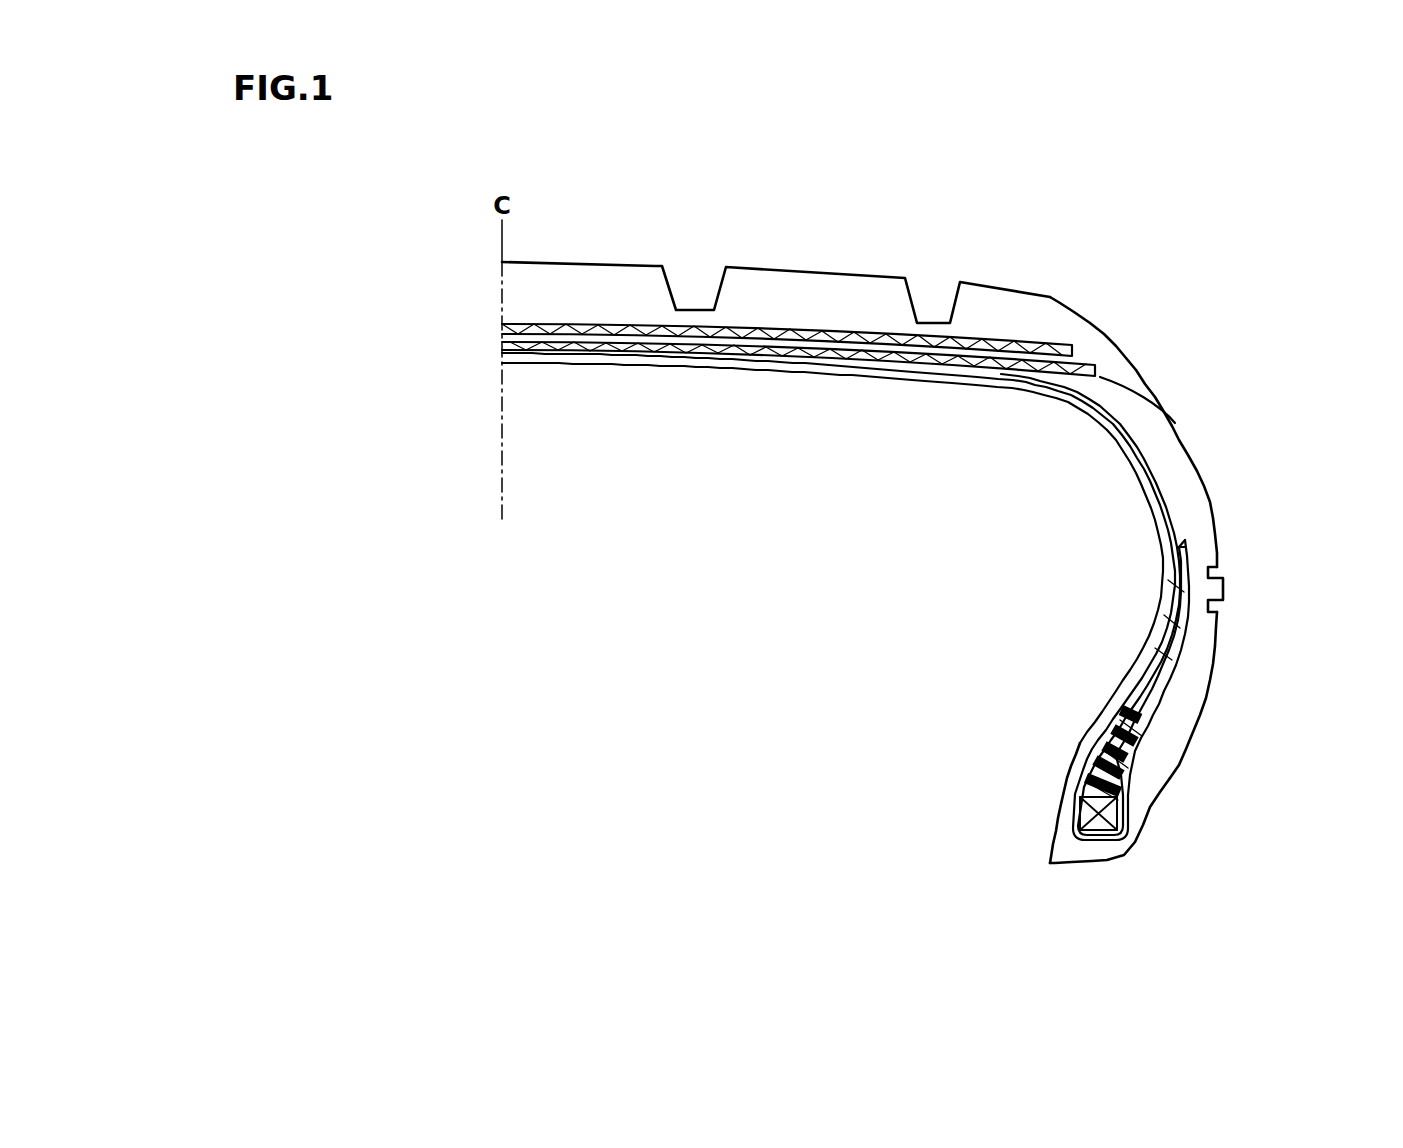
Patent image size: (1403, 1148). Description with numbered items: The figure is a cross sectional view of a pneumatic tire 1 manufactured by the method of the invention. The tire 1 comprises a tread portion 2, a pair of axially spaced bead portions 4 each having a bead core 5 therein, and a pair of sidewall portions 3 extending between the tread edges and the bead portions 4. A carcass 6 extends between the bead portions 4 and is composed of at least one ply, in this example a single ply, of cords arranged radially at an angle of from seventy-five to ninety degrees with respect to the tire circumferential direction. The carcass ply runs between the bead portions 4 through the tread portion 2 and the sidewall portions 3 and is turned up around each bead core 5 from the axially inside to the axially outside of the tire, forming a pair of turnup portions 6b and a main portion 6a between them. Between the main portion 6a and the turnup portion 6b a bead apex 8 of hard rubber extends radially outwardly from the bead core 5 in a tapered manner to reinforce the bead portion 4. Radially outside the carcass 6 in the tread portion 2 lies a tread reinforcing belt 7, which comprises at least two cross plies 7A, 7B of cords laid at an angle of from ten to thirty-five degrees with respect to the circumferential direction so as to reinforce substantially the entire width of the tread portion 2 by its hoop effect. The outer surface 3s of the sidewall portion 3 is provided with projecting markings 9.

The tire 1 is at (1228, 306).
The tread portion 2 is at (844, 252).
The sidewall portion 3 is at (1262, 388).
The outer surface of the sidewall portion 3s is at (1210, 500).
The bead portion 4 is at (1001, 748).
The bead core 5 is at (1097, 823).
The carcass 6 is at (960, 588).
The main portion 6a is at (1140, 663).
The turnup portion 6b is at (1170, 690).
The tread reinforcing belt 7 is at (540, 497).
The belt ply 7A is at (628, 340).
The belt ply 7B is at (569, 330).
The bead apex 8 is at (1100, 765).
The projecting markings 9 is at (1223, 590).